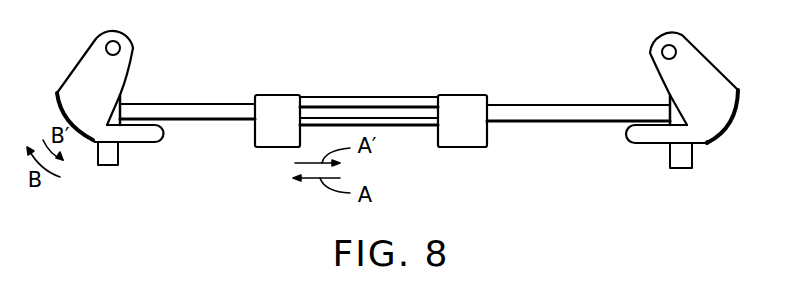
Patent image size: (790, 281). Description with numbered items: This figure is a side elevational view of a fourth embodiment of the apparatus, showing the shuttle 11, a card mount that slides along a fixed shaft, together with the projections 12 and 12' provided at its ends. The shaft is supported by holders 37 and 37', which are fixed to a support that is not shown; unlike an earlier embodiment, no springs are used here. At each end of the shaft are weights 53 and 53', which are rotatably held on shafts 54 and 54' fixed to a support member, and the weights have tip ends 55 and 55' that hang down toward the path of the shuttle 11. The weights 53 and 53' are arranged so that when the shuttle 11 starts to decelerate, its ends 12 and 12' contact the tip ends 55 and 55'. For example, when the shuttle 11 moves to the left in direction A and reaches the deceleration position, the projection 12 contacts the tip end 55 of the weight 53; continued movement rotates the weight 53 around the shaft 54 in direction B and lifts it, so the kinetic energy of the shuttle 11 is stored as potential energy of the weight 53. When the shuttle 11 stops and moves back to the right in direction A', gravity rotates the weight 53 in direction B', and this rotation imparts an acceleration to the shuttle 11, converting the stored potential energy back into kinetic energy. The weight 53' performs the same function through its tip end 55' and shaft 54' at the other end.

The shuttle 11 is at (373, 102).
The projection 12 is at (277, 91).
The projection 12' is at (462, 91).
The holder 37 is at (109, 181).
The holder 37' is at (687, 182).
The weight 53 is at (84, 76).
The weight 53' is at (700, 77).
The shaft 54 is at (140, 33).
The shaft 54' is at (634, 35).
The tip end 55 is at (147, 157).
The tip end 55' is at (645, 157).